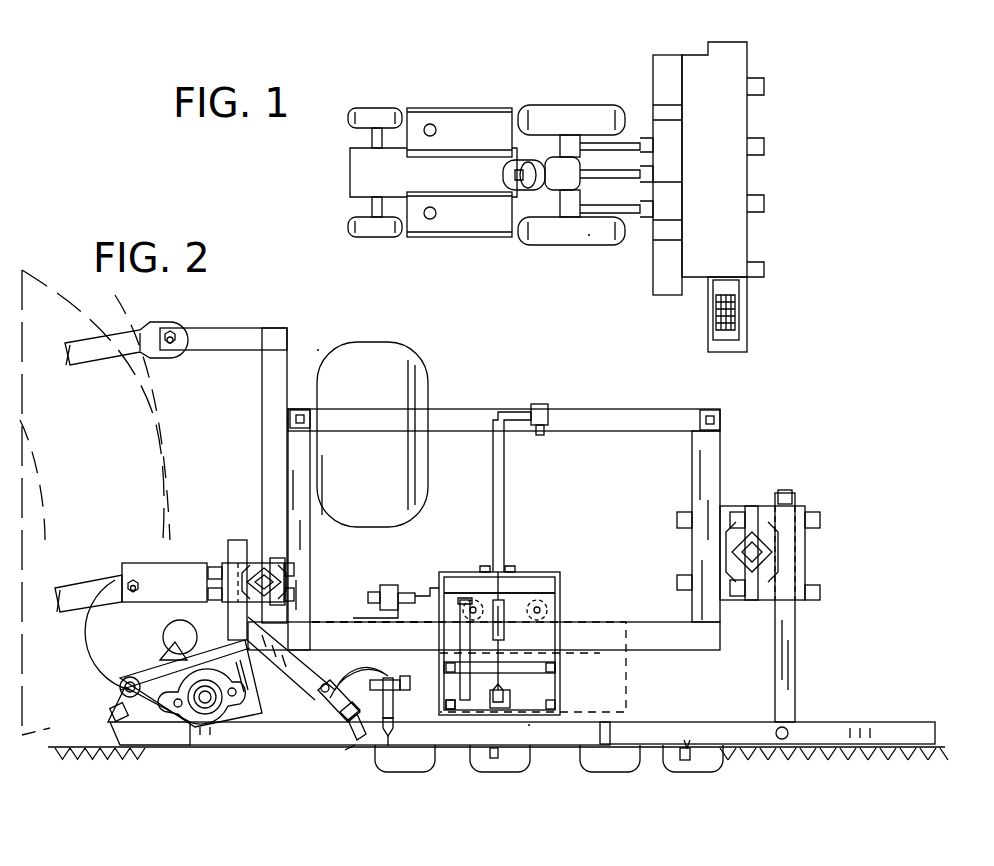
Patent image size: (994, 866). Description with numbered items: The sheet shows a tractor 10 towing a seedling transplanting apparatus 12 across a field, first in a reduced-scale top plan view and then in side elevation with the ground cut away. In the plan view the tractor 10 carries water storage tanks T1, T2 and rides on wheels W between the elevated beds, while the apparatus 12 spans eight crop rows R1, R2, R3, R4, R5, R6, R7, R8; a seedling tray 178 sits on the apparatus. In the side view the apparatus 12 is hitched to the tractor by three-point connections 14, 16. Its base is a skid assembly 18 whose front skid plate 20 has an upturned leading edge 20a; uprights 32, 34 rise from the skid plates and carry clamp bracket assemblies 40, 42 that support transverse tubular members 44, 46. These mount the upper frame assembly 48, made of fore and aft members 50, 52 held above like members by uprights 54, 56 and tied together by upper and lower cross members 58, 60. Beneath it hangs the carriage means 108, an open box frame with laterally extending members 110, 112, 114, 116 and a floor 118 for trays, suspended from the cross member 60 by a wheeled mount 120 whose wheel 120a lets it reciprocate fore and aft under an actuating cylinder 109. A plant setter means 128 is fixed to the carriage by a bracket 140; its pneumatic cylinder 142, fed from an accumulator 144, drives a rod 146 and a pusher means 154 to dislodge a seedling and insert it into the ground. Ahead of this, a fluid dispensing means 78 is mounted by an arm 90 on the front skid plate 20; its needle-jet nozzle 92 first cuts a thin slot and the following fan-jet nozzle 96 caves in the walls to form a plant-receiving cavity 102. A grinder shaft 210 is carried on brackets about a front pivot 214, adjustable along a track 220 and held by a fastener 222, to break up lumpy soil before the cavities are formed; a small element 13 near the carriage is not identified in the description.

In FIG. 1, the tractor 10 is at (538, 92).
In FIG. 1, the transplanting apparatus 12 is at (764, 64).
In FIG. 2, the transplanting apparatus 12 is at (322, 353).
In FIG. 2, the valve 13 is at (418, 585).
In FIG. 2, the hitch connection 14 is at (165, 355).
In FIG. 2, the hitch connection 16 is at (130, 541).
In FIG. 2, the skid assembly 18 is at (853, 710).
In FIG. 2, the front skid plate 20 is at (270, 747).
In FIG. 2, the leading edge 20a is at (148, 745).
In FIG. 2, the upright 32 is at (238, 540).
In FIG. 2, the upright 34 is at (790, 495).
In FIG. 2, the clamp bracket assembly 40 is at (212, 540).
In FIG. 2, the clamp bracket assembly 42 is at (770, 510).
In FIG. 2, the tubular member 44 is at (300, 581).
In FIG. 2, the tubular member 46 is at (765, 565).
In FIG. 2, the upper frame assembly 48 is at (752, 440).
In FIG. 2, the fore member 50 is at (302, 425).
In FIG. 2, the aft member 52 is at (722, 419).
In FIG. 2, the upright 54 is at (310, 533).
In FIG. 2, the upright 56 is at (692, 452).
In FIG. 2, the upper cross member 58 is at (605, 408).
In FIG. 2, the lower cross member 60 is at (698, 650).
In FIG. 2, the fluid dispensing means 78 is at (362, 752).
In FIG. 2, the arm 90 is at (382, 680).
In FIG. 2, the nozzle 92 is at (347, 717).
In FIG. 2, the nozzle 96 is at (393, 713).
In FIG. 2, the cavity 102 is at (433, 757).
In FIG. 2, the carriage means 108 is at (556, 557).
In FIG. 2, the actuating cylinder 109 is at (344, 640).
In FIG. 2, the laterally extending member 110 is at (445, 652).
In FIG. 2, the laterally extending member 112 is at (560, 666).
In FIG. 2, the laterally extending member 114 is at (445, 710).
In FIG. 2, the laterally extending member 116 is at (557, 695).
In FIG. 2, the floor 118 is at (530, 725).
In FIG. 2, the wheeled mount 120 is at (560, 600).
In FIG. 2, the wheel 120a is at (545, 612).
In FIG. 2, the plant setter means 128 is at (486, 553).
In FIG. 2, the bracket 140 is at (535, 568).
In FIG. 2, the fluid-actuated cylinder 142 is at (504, 480).
In FIG. 2, the accumulator 144 is at (418, 363).
In FIG. 2, the rod 146 is at (485, 580).
In FIG. 2, the pusher means 154 is at (512, 672).
In FIG. 1, the seedling tray 178 is at (733, 319).
In FIG. 2, the shaft 210 is at (207, 699).
In FIG. 2, the front pivot 214 is at (126, 685).
In FIG. 2, the track 220 is at (254, 690).
In FIG. 2, the fastener 222 is at (260, 662).
In FIG. 1, the water storage tank T1 is at (474, 116).
In FIG. 1, the water storage tank T2 is at (472, 232).
In FIG. 1, the wheel W is at (590, 235).
In FIG. 2, the wheel W is at (50, 752).
In FIG. 1, the crop row R1 is at (750, 70).
In FIG. 1, the crop row R2 is at (750, 102).
In FIG. 1, the crop row R3 is at (750, 128).
In FIG. 1, the crop row R4 is at (750, 160).
In FIG. 1, the crop row R5 is at (750, 190).
In FIG. 1, the crop row R6 is at (750, 217).
In FIG. 1, the crop row R7 is at (750, 250).
In FIG. 1, the crop row R8 is at (750, 285).